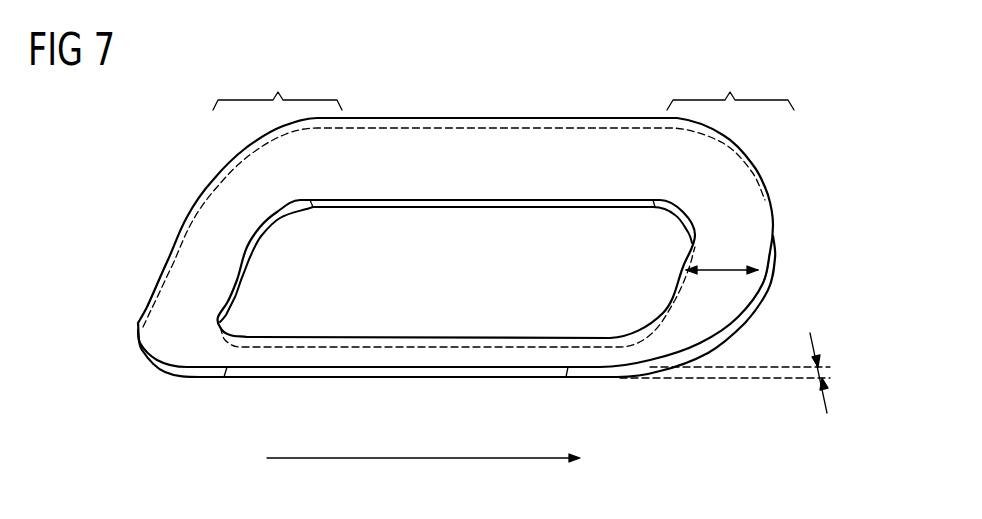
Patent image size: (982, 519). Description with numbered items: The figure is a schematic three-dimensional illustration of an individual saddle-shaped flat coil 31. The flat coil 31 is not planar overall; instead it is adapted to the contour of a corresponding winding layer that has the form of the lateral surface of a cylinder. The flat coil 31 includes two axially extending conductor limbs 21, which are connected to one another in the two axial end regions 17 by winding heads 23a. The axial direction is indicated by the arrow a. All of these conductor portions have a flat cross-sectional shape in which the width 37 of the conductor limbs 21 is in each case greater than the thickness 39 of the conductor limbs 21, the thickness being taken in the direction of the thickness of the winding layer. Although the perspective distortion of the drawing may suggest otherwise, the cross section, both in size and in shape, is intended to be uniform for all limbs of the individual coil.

The flat coil 31 is at (105, 143).
The axial end regions 17 is at (503, 84).
The conductor limbs 21 is at (469, 112).
The winding heads 23a is at (151, 263).
The width 37 is at (723, 268).
The thickness 39 is at (825, 372).
The direction a is at (474, 457).